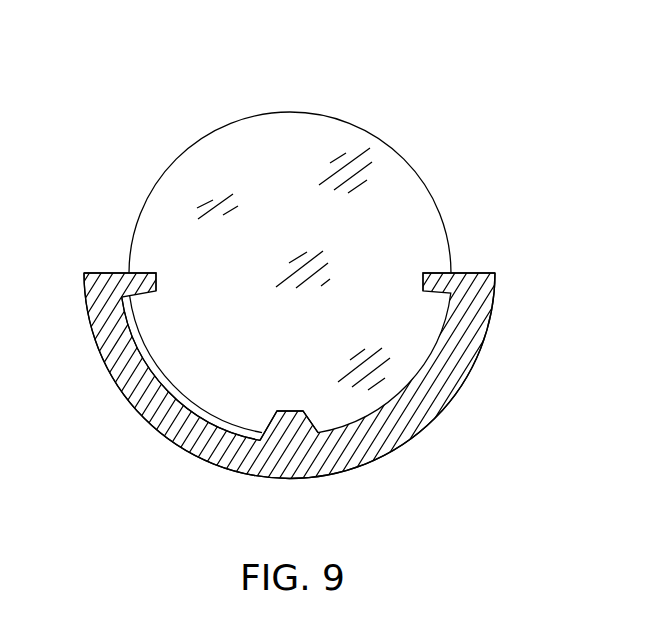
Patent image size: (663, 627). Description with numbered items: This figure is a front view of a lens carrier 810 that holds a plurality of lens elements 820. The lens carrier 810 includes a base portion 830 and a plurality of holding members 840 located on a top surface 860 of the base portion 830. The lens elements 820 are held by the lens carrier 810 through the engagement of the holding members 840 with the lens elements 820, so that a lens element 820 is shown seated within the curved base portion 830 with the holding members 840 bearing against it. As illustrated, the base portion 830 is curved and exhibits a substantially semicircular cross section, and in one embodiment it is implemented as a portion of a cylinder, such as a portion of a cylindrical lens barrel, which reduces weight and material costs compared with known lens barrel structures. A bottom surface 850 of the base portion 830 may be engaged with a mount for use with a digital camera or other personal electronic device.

The lens carrier 810 is at (504, 318).
The lens elements 820 is at (335, 118).
The base portion 830 is at (452, 402).
The holding members 840 is at (122, 273).
The bottom surface 850 is at (138, 424).
The top surface 860 is at (157, 362).